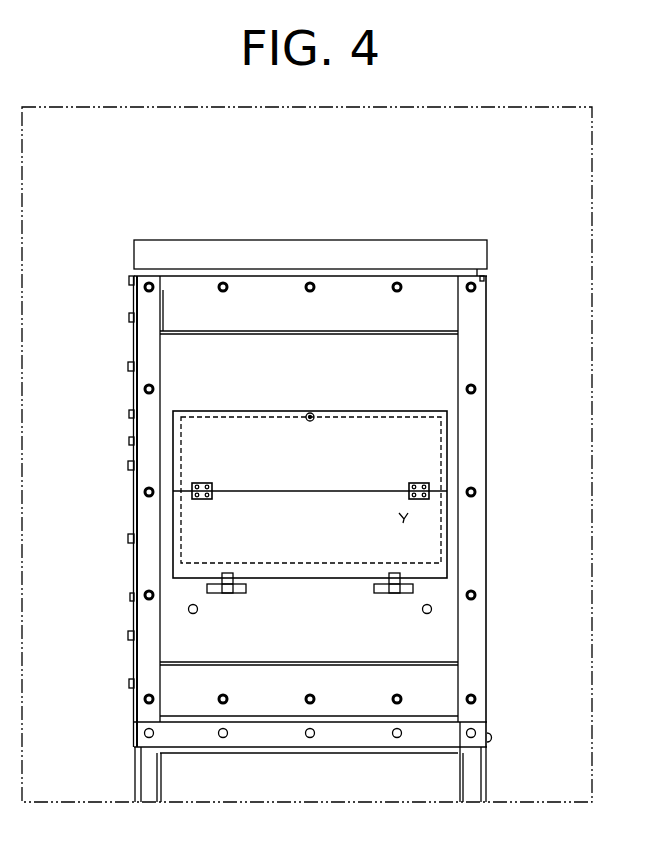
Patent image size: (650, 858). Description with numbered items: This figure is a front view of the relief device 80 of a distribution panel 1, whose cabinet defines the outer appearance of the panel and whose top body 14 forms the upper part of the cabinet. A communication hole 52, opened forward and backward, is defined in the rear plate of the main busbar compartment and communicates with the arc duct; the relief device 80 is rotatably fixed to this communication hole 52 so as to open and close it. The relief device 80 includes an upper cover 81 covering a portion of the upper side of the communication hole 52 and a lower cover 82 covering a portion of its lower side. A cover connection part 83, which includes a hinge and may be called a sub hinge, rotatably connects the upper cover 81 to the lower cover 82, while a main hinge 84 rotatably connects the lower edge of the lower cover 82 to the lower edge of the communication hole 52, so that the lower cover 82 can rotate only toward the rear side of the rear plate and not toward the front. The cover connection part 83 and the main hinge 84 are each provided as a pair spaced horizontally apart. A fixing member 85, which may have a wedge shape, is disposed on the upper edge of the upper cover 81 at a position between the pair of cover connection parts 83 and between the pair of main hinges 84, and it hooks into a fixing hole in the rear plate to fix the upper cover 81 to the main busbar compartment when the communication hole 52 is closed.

The distribution panel 1 is at (444, 213).
The top body 14 is at (474, 239).
The relief device 80 is at (447, 439).
The upper cover 81 is at (434, 425).
The lower cover 82 is at (430, 540).
The cover connection part 83 is at (424, 483).
The main hinge 84 is at (400, 574).
The fixing member 85 is at (313, 414).
The communication hole 52 is at (404, 518).